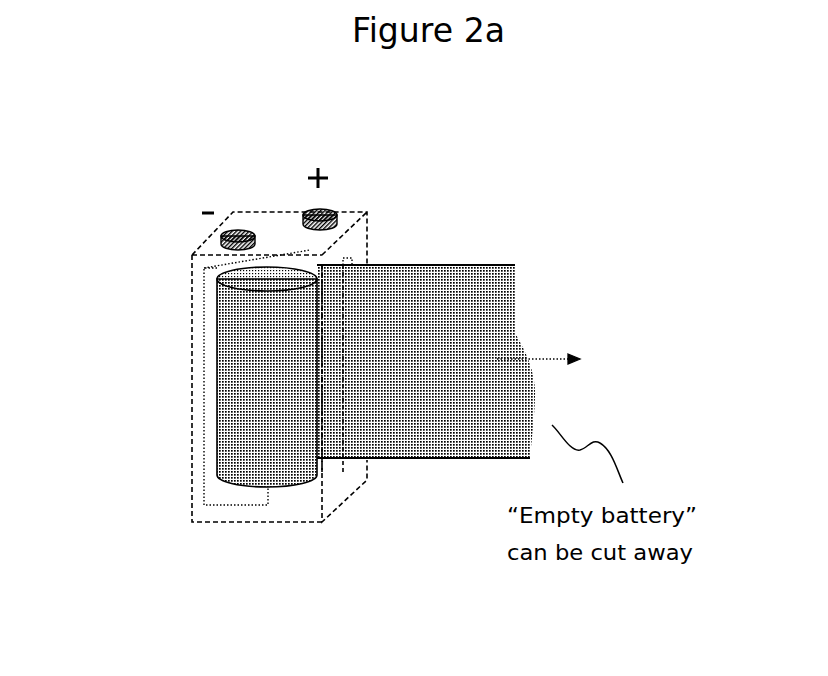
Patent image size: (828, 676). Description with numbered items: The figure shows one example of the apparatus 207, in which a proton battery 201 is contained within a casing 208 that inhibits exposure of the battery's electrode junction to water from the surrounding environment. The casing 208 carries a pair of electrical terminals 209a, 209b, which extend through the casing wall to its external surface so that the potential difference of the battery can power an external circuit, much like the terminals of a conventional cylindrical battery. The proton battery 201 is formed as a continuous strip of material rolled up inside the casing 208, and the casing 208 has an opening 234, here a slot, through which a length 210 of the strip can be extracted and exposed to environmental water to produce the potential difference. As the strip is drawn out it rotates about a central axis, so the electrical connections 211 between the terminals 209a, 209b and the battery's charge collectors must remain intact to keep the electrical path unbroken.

The proton battery 201 is at (267, 377).
The apparatus 207 is at (313, 367).
The casing 208 is at (337, 578).
The electrical terminal 209a is at (238, 232).
The electrical terminal 209b is at (316, 210).
The length of the continuous strip 210 is at (418, 292).
The electrical connections 211 is at (205, 413).
The opening 234 is at (345, 462).